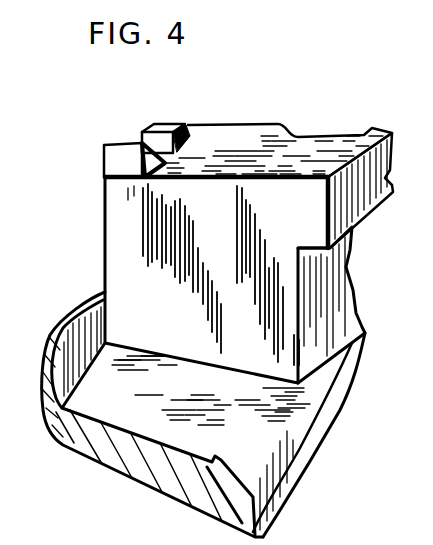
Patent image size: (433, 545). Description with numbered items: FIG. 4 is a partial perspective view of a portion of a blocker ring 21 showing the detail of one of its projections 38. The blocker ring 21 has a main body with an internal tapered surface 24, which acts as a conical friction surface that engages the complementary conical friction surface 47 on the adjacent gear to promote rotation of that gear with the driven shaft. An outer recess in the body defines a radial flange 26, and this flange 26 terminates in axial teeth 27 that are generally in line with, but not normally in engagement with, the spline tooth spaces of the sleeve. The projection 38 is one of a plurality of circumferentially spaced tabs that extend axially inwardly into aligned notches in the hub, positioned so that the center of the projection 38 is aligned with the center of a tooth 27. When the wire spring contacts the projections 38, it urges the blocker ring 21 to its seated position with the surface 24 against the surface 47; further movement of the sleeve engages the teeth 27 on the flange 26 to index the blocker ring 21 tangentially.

The blocker ring 21 is at (314, 336).
The internal tapered surface 24 is at (150, 354).
The radial flange 26 is at (122, 188).
The axial teeth 27 is at (105, 146).
The projection 38 is at (343, 148).
The conical friction surface 47 is at (230, 413).